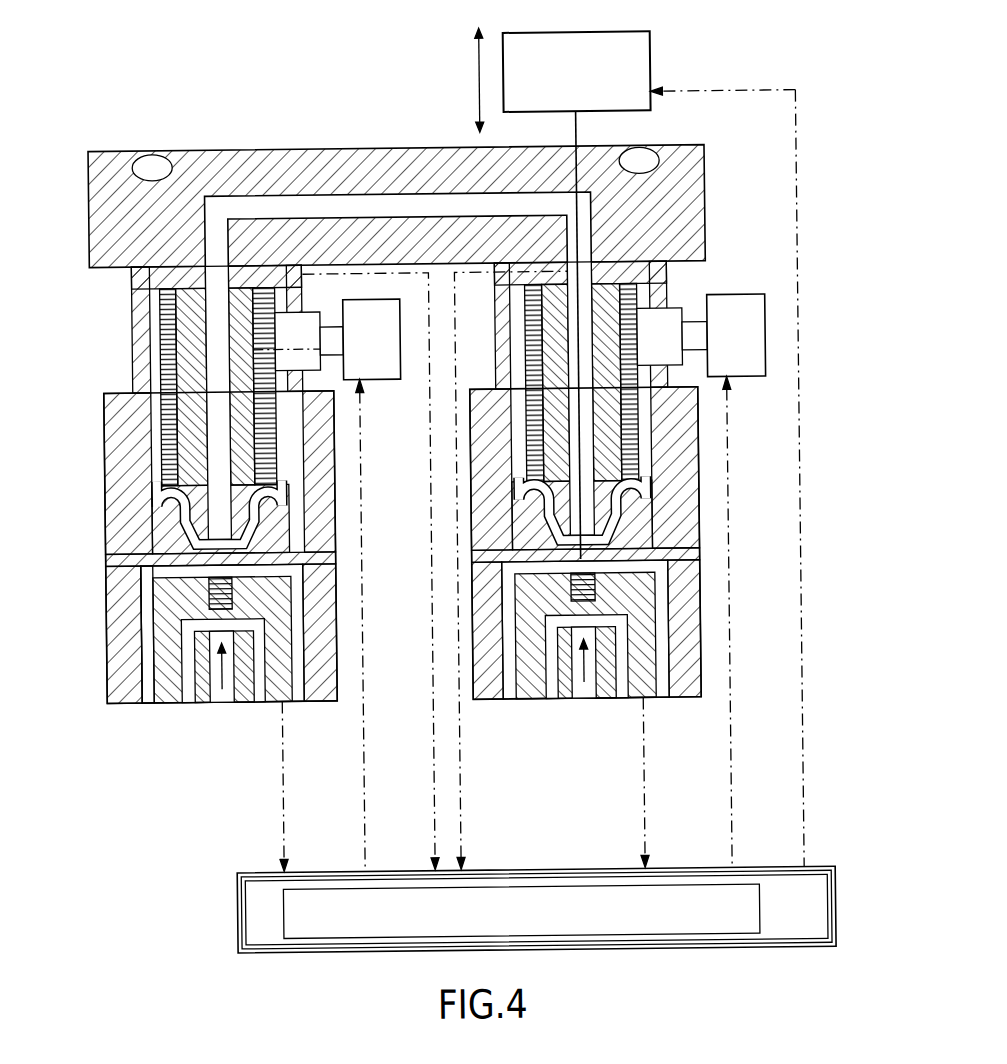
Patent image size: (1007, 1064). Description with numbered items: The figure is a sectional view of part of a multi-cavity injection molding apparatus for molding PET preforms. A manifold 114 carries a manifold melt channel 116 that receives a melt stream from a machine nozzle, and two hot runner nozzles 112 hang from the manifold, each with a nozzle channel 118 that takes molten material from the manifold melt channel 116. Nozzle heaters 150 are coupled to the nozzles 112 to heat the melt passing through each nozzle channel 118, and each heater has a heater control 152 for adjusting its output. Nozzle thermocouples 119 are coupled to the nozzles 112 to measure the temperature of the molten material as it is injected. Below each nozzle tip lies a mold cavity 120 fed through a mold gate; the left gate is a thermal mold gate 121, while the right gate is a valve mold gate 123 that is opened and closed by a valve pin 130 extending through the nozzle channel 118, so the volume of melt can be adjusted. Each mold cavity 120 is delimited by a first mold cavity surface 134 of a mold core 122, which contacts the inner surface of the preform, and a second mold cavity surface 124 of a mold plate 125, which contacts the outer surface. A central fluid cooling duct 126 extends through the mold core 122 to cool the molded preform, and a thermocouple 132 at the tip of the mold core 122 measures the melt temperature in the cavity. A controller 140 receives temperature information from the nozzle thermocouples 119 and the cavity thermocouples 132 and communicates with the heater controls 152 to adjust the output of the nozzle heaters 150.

The hot runner nozzle 112 is at (192, 366).
The manifold 114 is at (217, 158).
The manifold melt channel 116 is at (323, 204).
The nozzle channel 118 is at (219, 331).
The nozzle thermocouple 119 is at (322, 347).
The mold cavity 120 is at (150, 668).
The mold gate 121 is at (123, 561).
The mold core 122 is at (177, 687).
The mold gate 123 is at (588, 557).
The second mold cavity surface 124 is at (297, 594).
The mold plate 125 is at (319, 625).
The central fluid cooling duct 126 is at (232, 687).
The valve pin 130 is at (585, 275).
The thermocouple 132 is at (222, 589).
The first mold cavity surface 134 is at (120, 646).
The controller 140 is at (508, 902).
The nozzle heater 150 is at (171, 424).
The heater control 152 is at (378, 362).